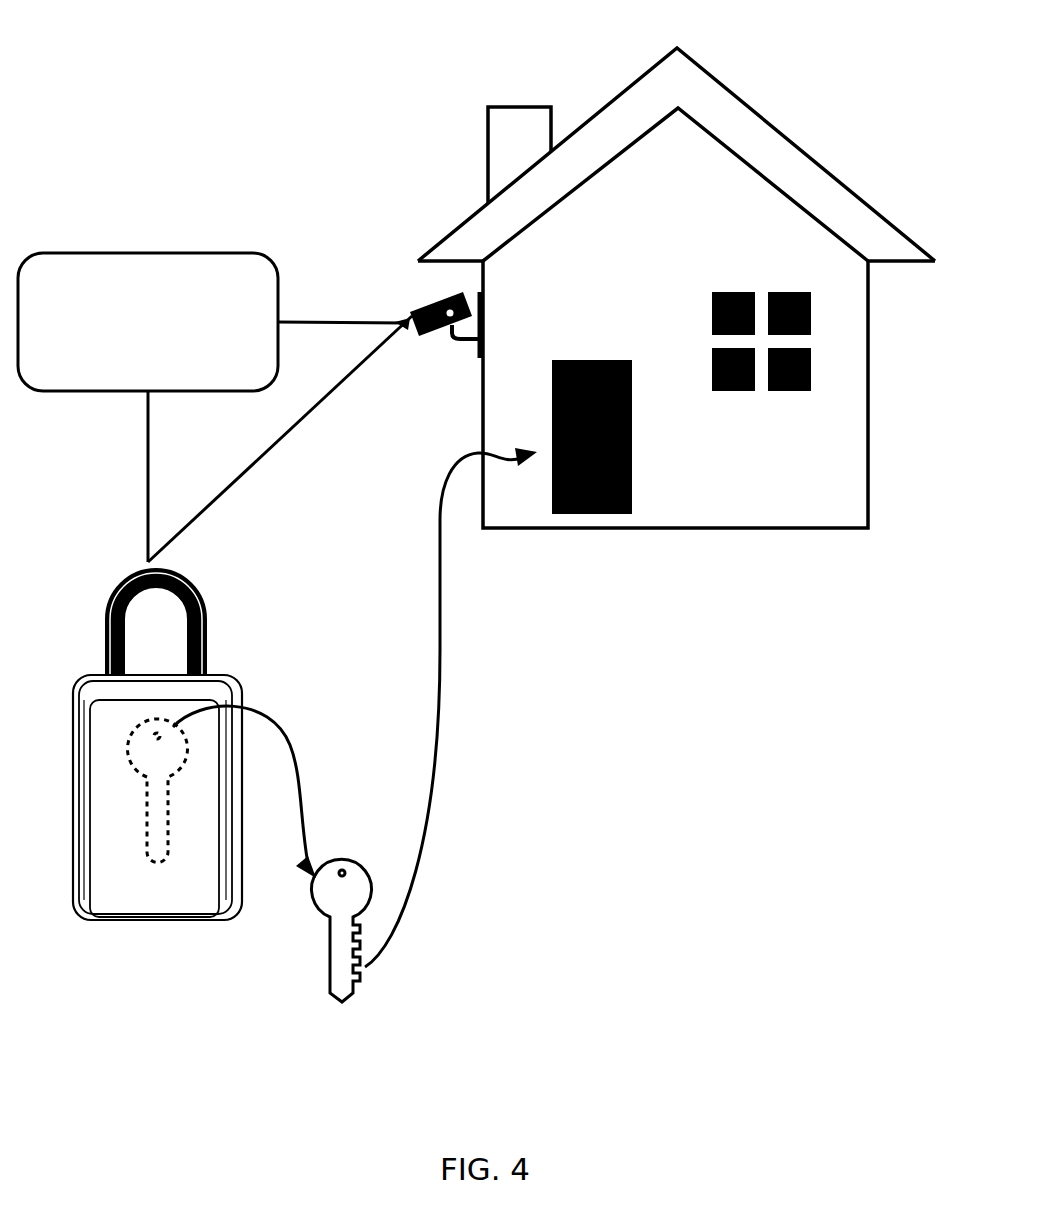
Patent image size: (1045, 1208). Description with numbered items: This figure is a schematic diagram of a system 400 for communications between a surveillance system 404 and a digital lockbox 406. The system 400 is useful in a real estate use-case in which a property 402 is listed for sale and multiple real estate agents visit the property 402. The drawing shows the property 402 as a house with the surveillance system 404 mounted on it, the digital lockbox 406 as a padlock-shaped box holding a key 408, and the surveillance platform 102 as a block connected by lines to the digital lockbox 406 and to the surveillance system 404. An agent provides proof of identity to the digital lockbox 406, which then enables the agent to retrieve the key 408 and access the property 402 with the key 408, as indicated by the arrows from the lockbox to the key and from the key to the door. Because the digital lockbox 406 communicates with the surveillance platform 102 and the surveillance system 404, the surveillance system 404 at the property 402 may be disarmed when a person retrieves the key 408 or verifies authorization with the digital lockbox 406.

The system 400 is at (236, 66).
The surveillance platform 102 is at (167, 346).
The property 402 is at (740, 579).
The surveillance system 404 is at (482, 336).
The digital lockbox 406 is at (175, 991).
The key 408 is at (173, 896).